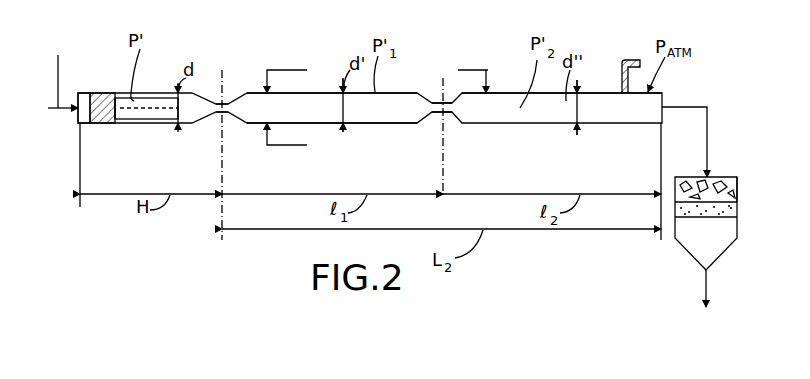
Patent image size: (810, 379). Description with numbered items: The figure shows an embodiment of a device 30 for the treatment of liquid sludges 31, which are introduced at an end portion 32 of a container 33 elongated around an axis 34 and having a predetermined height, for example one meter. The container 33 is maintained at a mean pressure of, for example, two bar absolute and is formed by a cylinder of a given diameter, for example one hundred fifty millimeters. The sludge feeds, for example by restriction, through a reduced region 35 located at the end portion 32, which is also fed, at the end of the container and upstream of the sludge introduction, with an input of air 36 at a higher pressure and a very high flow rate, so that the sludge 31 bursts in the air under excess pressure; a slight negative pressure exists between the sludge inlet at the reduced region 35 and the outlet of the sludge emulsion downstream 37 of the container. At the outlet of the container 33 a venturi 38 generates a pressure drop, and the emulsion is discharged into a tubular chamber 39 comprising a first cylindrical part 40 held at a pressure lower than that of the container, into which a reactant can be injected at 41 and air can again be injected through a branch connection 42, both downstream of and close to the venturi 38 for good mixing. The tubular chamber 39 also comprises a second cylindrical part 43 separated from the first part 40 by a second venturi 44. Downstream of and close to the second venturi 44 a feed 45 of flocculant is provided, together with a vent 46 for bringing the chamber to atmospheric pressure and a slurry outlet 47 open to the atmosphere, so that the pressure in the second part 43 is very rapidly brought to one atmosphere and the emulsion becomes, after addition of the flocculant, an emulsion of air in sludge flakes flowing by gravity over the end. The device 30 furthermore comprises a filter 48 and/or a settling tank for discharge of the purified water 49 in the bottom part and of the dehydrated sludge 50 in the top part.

The device 30 is at (315, 72).
The liquid sludges 31 is at (100, 128).
The end portion 32 is at (100, 90).
The container 33 is at (158, 93).
The axis 34 is at (48, 110).
The reduced region 35 is at (117, 116).
The input of air 36 is at (60, 73).
The outlet of the sludge emulsion downstream 37 is at (226, 132).
The venturi 38 is at (230, 92).
The tubular chamber 39 is at (386, 128).
The first cylindrical part 40 is at (398, 92).
The reactant injection 41 is at (290, 146).
The branch connection 42 is at (288, 70).
The second cylindrical part 43 is at (503, 92).
The second venturi 44 is at (449, 114).
The feed of flocculant 45 is at (470, 70).
The vent 46 is at (618, 76).
The slurry outlet 47 is at (667, 92).
The filter 48 is at (674, 183).
The purified water 49 is at (706, 285).
The dehydrated sludge 50 is at (724, 177).